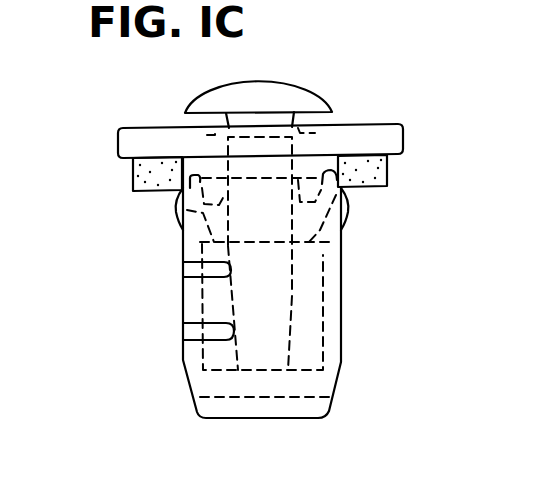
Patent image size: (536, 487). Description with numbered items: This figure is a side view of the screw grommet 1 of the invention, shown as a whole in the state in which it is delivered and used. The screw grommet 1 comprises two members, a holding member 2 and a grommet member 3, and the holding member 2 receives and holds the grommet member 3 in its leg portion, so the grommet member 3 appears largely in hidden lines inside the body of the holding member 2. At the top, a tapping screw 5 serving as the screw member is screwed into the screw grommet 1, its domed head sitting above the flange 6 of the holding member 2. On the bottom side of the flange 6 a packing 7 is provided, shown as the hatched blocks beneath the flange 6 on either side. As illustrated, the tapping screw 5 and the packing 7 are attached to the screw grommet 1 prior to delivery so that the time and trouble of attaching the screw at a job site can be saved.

The screw grommet 1 is at (77, 242).
The holding member 2 is at (183, 246).
The grommet member 3 is at (198, 298).
The tapping screw 5 is at (313, 96).
The flange 6 is at (392, 143).
The packing 7 is at (387, 173).